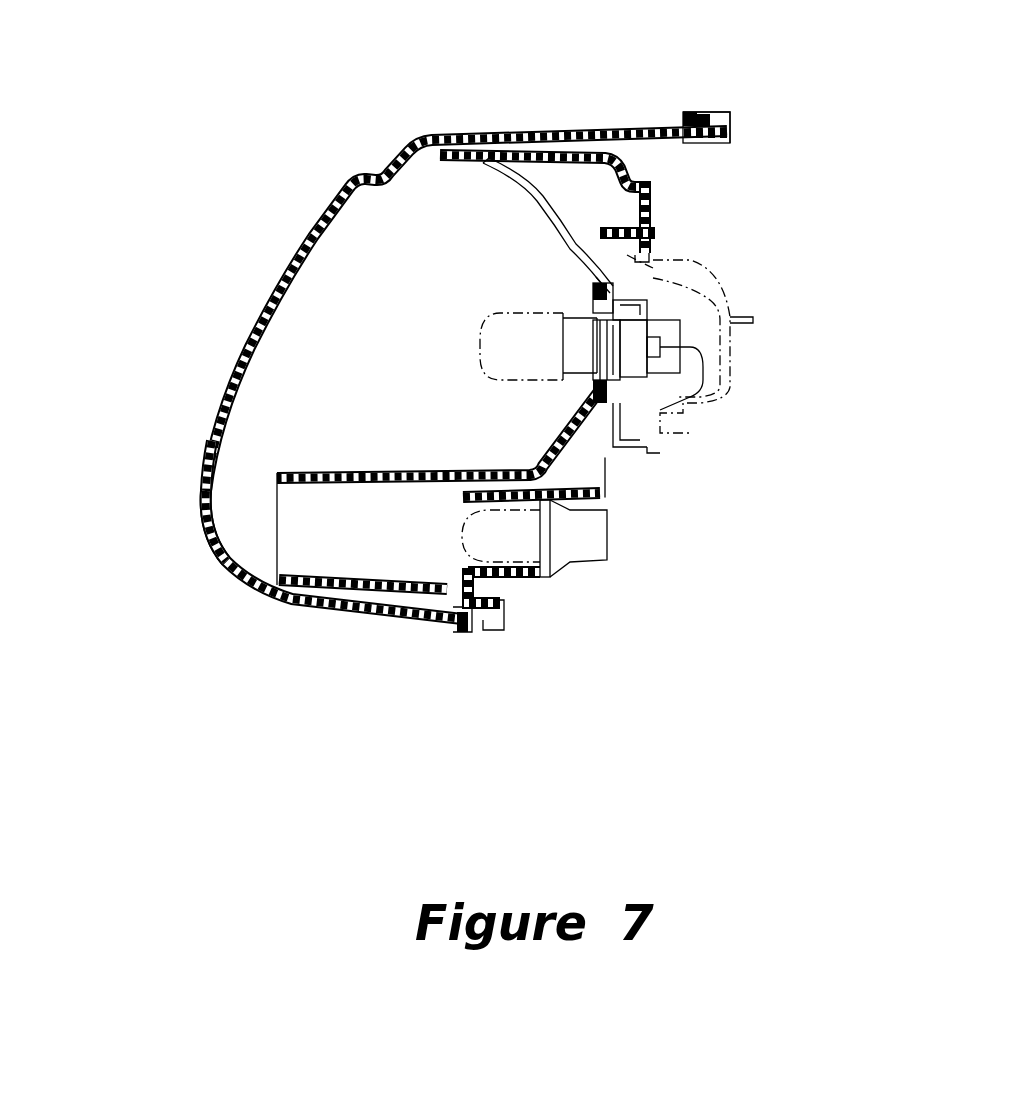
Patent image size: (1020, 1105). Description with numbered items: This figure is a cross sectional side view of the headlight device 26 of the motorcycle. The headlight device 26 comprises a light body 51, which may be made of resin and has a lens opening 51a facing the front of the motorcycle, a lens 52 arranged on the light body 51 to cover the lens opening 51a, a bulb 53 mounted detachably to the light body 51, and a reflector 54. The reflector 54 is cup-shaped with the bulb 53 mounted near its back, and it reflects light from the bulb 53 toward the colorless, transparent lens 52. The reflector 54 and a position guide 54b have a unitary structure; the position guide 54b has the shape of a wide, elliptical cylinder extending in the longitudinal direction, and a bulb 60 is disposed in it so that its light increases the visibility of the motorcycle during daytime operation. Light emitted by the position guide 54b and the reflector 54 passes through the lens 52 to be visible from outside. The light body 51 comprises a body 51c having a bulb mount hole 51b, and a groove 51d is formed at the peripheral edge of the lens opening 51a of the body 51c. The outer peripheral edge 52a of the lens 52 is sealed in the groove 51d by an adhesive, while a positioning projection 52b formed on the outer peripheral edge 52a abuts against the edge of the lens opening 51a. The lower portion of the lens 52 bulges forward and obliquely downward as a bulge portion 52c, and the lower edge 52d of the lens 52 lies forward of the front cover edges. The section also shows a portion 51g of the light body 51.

The headlight device 26 is at (447, 383).
The light body 51 is at (643, 383).
The lens opening 51a is at (687, 110).
The bulb mount hole 51b is at (660, 250).
The body 51c is at (653, 183).
The groove 51d is at (482, 633).
The lower wall portion of bracket 51g is at (520, 580).
The lens 52 is at (447, 396).
The outer peripheral edge 52a is at (698, 110).
The positioning projection 52b is at (457, 627).
The bulge portion 52c is at (203, 488).
The lower edge 52d is at (207, 538).
The bulb 53 is at (473, 330).
The reflector 54 is at (462, 372).
The position guide 54b is at (363, 477).
The bulb 60 is at (455, 520).